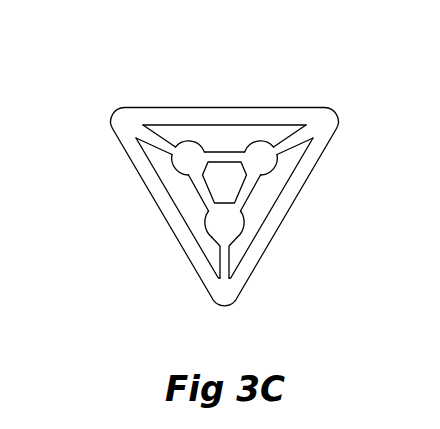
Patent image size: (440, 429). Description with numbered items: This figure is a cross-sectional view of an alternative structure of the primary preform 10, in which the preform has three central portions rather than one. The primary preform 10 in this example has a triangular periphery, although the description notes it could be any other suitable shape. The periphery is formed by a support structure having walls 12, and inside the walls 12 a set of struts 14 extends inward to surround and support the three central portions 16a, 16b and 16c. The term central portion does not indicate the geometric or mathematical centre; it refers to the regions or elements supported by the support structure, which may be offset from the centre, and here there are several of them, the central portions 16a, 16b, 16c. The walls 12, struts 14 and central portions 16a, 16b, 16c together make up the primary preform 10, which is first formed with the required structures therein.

The primary preform 10 is at (98, 84).
The walls 12 is at (248, 117).
The struts 14 is at (158, 142).
The central portion 16a is at (187, 160).
The central portion 16b is at (224, 225).
The central portion 16c is at (262, 160).